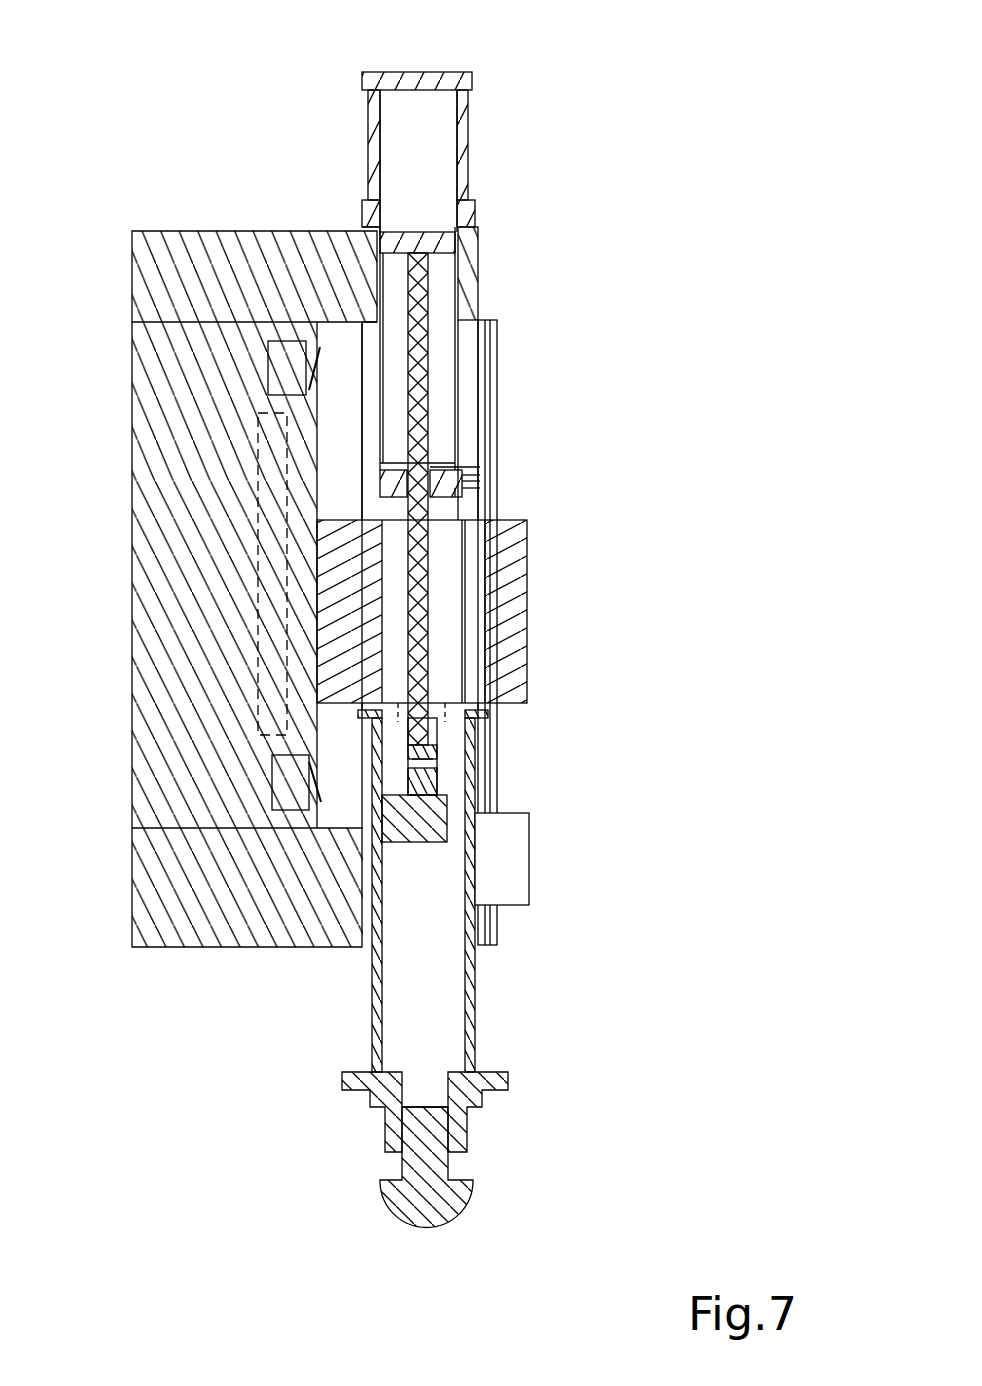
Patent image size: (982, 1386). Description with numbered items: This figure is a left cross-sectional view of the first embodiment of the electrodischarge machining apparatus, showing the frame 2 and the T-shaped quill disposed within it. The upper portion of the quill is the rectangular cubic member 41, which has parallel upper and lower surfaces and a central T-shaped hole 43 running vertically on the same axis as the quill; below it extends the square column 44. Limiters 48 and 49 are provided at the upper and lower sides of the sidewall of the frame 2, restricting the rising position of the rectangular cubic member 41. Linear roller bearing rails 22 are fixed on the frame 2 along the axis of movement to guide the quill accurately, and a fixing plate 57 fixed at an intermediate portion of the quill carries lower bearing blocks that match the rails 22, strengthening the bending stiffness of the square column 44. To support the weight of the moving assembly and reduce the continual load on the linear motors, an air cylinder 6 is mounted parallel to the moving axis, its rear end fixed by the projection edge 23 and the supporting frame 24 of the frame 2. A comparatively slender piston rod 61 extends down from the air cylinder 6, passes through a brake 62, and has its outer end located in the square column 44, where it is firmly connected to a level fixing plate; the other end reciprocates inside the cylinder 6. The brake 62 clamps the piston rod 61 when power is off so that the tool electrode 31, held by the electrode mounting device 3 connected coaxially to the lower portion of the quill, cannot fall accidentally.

The frame 2 is at (233, 515).
The electrode mounting device 3 is at (496, 1098).
The air cylinder 6 is at (467, 464).
The linear roller bearing rails 22 is at (573, 632).
The projection edge 23 is at (505, 45).
The supporting frame 24 is at (501, 148).
The tool electrode 31 is at (510, 1167).
The rectangular cubic member 41 is at (286, 611).
The T-shaped hole 43 is at (264, 696).
The square column 44 is at (525, 895).
The limiter 48 is at (304, 280).
The limiter 49 is at (310, 877).
The fixing plate 57 is at (573, 859).
The piston rod 61 is at (513, 499).
The brake 62 is at (499, 487).